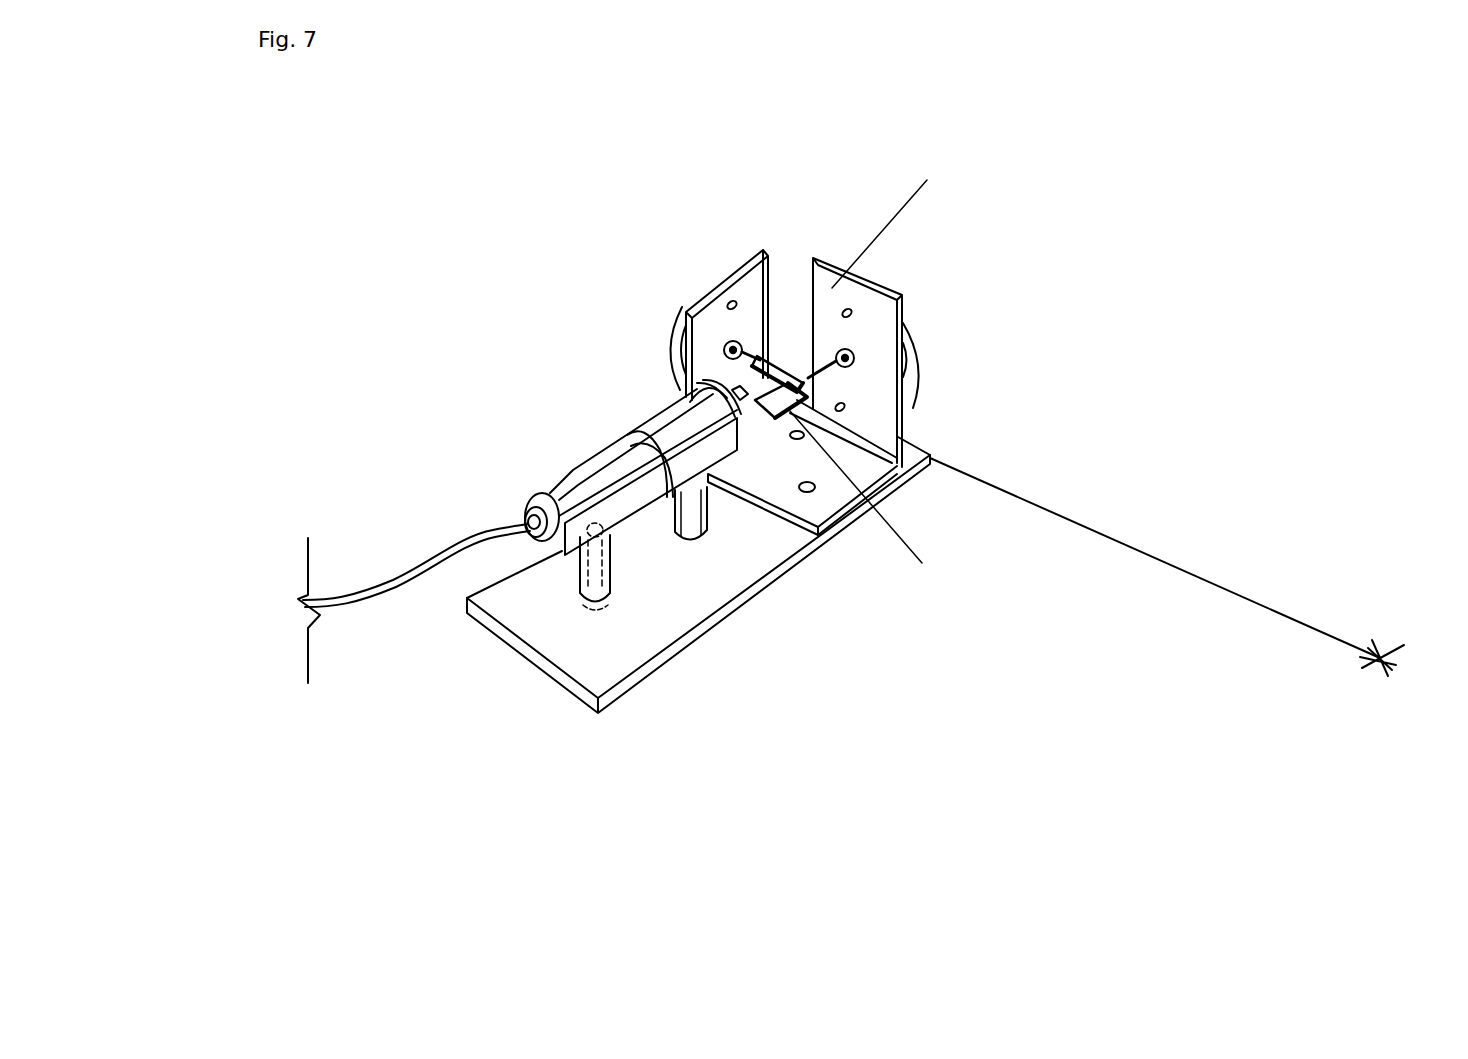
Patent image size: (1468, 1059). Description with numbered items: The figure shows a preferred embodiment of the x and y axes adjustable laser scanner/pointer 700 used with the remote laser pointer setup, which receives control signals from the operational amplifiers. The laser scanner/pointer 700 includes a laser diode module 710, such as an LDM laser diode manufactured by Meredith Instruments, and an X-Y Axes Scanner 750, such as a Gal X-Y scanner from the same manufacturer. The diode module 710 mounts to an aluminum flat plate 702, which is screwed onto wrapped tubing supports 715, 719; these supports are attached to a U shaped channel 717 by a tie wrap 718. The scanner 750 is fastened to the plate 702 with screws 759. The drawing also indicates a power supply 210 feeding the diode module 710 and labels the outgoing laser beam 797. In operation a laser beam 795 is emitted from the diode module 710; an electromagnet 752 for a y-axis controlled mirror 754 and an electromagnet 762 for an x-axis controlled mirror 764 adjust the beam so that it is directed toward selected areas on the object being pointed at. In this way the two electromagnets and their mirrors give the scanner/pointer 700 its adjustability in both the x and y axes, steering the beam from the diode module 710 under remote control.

The laser scanner/pointer 700 is at (385, 217).
The aluminum flat plate 702 is at (497, 603).
The power supply 210 is at (350, 580).
The laser diode module 710 is at (523, 503).
The wrapped tubing support 715 is at (573, 587).
The U shaped channel 717 is at (638, 500).
The tie wrap 718 is at (647, 437).
The wrapped tubing support 719 is at (710, 535).
The X-Y Axes Scanner 750 is at (887, 422).
The electromagnet 752 is at (680, 323).
The y-axis controlled mirror 754 is at (768, 345).
The screws 759 is at (808, 491).
The electromagnet 762 is at (915, 335).
The x-axis controlled mirror 764 is at (917, 408).
The laser beam 795 is at (730, 382).
The laser beam 797 is at (1133, 548).